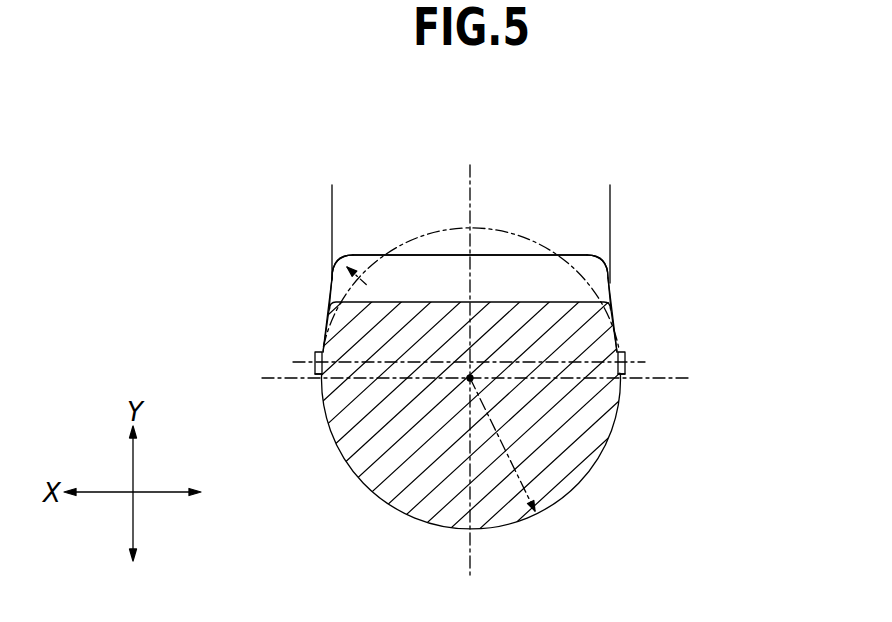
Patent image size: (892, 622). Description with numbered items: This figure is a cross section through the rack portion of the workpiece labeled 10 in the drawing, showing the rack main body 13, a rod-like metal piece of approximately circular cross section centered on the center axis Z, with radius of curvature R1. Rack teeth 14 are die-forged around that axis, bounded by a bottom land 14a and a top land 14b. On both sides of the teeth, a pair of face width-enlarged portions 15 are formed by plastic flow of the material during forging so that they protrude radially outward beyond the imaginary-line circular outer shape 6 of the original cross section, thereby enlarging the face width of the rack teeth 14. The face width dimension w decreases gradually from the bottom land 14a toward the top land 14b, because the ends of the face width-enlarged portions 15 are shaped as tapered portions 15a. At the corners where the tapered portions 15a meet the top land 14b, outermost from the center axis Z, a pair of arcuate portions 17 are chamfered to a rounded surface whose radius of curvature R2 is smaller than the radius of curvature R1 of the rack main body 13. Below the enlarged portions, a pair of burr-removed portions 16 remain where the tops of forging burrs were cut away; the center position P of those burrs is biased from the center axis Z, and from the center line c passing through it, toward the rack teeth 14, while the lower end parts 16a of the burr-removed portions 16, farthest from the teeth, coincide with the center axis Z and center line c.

The spherical surface (original sphere) 6 is at (410, 240).
The ball stud (ball joint) 10 is at (596, 488).
The rack main body 13 is at (434, 485).
The rack teeth 14 is at (494, 252).
The bottom land 14a is at (522, 303).
The top land 14b is at (453, 255).
The face width-enlarged portions 15 is at (338, 288).
The tapered portions 15a is at (330, 315).
The burr-removed portions 16 is at (318, 352).
The lower end parts 16a is at (314, 374).
The arcuate portions 17 is at (333, 235).
The center position of burrs P is at (315, 360).
The center line c is at (653, 380).
The face width dimension w is at (600, 207).
The radius of curvature of rack main body R1 is at (521, 486).
The radius of curvature of arcuate portions R2 is at (347, 268).
The center axis Z is at (470, 378).